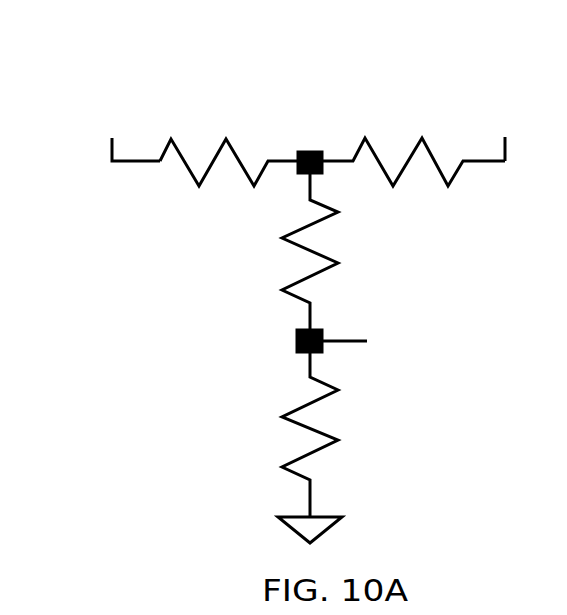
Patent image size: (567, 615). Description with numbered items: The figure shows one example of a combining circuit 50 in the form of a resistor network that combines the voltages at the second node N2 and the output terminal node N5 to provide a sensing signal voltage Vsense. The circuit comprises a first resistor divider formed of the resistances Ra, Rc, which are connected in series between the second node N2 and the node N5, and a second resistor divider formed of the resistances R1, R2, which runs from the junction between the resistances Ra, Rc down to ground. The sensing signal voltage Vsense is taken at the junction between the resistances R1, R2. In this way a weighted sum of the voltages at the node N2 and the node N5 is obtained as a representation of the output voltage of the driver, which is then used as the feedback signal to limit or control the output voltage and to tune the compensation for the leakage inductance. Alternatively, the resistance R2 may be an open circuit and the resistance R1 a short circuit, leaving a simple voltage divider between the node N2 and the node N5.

The combining circuit 50 is at (114, 66).
The resistance Ra is at (229, 141).
The resistance Rc is at (413, 141).
The resistance R1 is at (324, 251).
The resistance R2 is at (324, 434).
The second node N2 is at (124, 131).
The output terminal node N5 is at (512, 129).
The sensing signal voltage Vsense is at (383, 325).